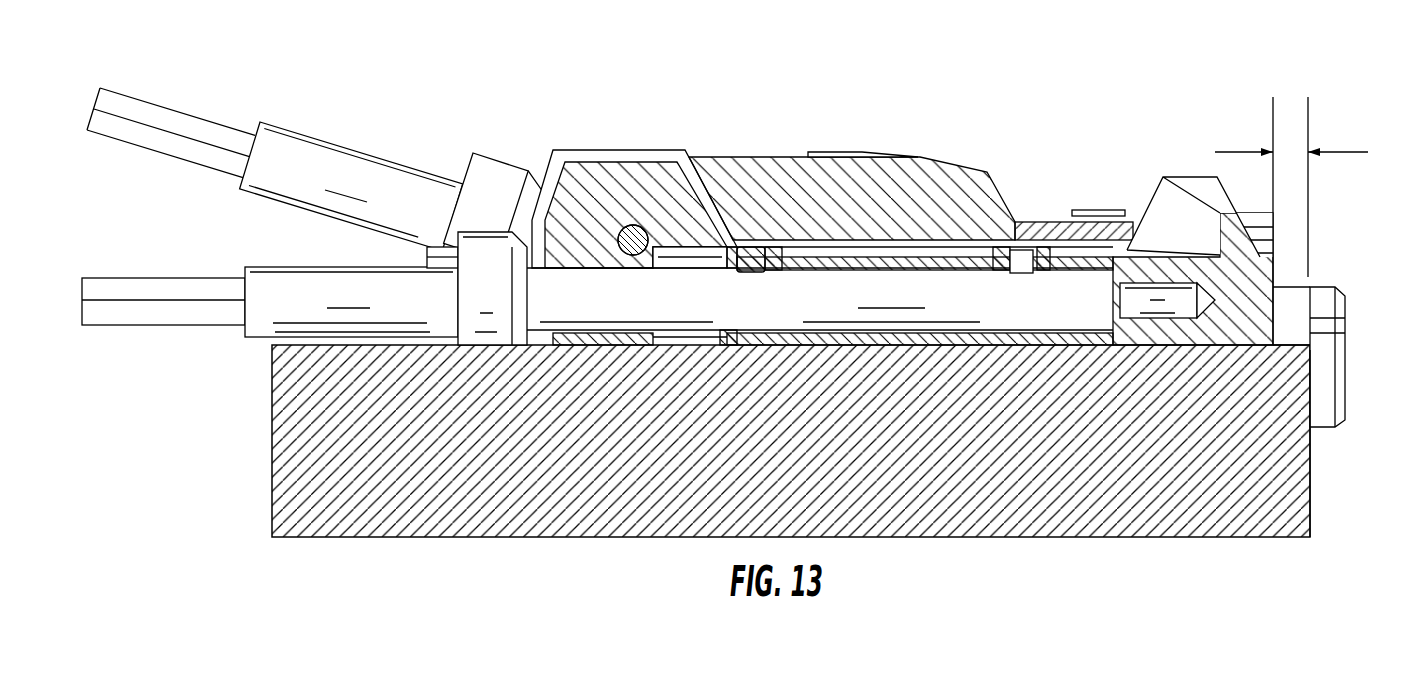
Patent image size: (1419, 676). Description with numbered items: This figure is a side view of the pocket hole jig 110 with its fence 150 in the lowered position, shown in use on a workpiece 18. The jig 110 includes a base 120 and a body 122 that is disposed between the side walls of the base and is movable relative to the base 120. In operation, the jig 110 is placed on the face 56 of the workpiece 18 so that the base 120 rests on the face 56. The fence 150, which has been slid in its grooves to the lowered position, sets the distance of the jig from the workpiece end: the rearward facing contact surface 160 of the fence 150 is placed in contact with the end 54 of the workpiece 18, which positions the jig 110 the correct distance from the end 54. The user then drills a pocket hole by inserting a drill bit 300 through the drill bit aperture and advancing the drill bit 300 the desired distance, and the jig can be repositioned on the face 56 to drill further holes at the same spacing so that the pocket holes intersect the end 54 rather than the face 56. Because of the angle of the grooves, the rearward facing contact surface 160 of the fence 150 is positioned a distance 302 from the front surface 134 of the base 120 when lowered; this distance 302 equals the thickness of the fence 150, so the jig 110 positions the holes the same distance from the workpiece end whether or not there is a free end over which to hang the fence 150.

The workpiece 18 is at (897, 510).
The drill bit 300 is at (292, 158).
The face 56 is at (403, 347).
The base 120 is at (622, 158).
The body 122 is at (780, 158).
The pocket hole jig 110 is at (972, 140).
The distance 302 is at (1235, 150).
The front surface 134 is at (1273, 267).
The fence 150 is at (1322, 427).
The end 54 is at (1310, 495).
The rearward facing contact surface 160 is at (1310, 388).